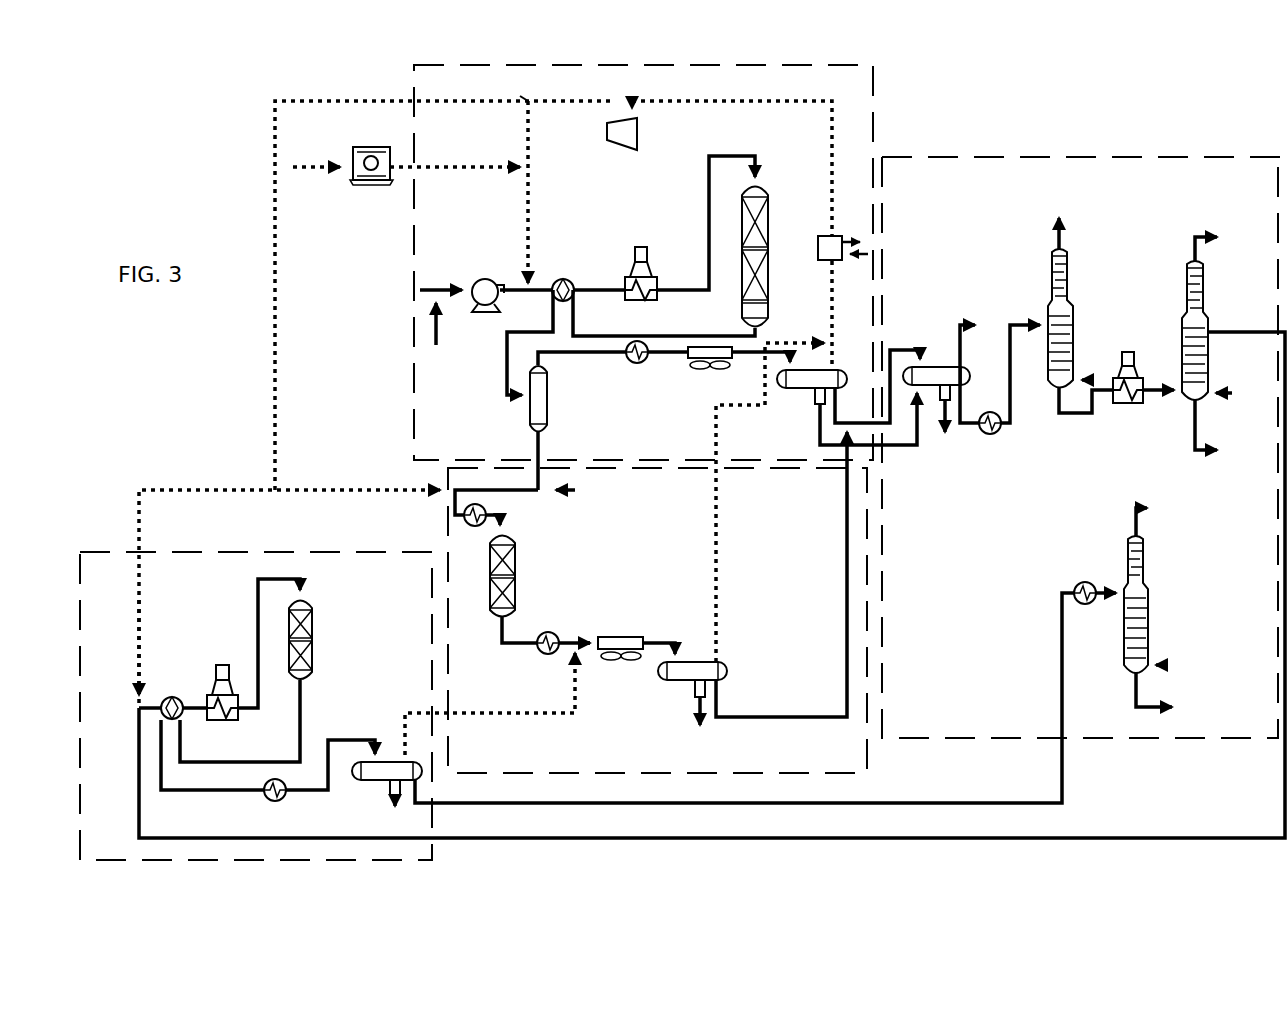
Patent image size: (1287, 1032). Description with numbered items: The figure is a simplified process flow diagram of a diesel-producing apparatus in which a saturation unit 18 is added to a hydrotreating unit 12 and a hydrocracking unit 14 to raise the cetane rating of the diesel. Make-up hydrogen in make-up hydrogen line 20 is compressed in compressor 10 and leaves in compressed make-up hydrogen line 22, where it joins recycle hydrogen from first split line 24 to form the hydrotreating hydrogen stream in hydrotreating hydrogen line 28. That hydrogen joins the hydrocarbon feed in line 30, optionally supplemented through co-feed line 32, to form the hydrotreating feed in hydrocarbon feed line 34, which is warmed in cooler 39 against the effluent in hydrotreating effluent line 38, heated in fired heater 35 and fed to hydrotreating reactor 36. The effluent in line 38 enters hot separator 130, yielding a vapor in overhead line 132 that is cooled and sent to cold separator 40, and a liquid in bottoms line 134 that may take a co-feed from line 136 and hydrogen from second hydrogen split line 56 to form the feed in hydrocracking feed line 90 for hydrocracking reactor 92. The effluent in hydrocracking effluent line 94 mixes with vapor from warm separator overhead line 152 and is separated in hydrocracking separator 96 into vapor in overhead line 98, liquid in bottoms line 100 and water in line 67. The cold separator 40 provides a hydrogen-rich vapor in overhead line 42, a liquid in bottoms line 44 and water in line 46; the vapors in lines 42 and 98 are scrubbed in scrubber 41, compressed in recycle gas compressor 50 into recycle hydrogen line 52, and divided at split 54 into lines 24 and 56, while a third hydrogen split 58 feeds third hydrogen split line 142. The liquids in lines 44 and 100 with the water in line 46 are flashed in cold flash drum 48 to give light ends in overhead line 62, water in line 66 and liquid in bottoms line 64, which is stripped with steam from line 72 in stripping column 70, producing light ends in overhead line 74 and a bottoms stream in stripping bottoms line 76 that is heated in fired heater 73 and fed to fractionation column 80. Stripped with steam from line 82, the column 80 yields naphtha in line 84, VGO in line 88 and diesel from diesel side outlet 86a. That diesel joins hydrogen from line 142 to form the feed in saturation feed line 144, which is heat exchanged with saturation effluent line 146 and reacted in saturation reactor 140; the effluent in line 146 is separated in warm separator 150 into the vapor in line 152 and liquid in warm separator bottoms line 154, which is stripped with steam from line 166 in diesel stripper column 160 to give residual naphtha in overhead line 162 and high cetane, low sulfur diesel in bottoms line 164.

The compressor 10 is at (392, 185).
The hydrotreating unit 12 is at (876, 75).
The hydrocracking unit 14 is at (448, 500).
The saturation unit 18 is at (215, 552).
The make-up hydrogen line 20 is at (312, 170).
The compressed make-up hydrogen line 22 is at (440, 178).
The first split line 24 is at (530, 155).
The hydrotreating hydrogen line 28 is at (526, 214).
The hydrocarbon feed line 30 is at (425, 290).
The co-feed line 32 is at (440, 312).
The hydrocarbon feed line 34 is at (545, 284).
The fired heater 35 is at (645, 262).
The hydrotreating reactor 36 is at (768, 210).
The hydrotreating effluent line 38 is at (676, 335).
The cooler 39 is at (572, 283).
The cold separator 40 is at (800, 388).
The scrubber 41 is at (817, 250).
The cold separator overhead line 42 is at (832, 312).
The cold separator bottoms line 44 is at (840, 400).
The aqueous line 46 is at (820, 442).
The cold flash drum 48 is at (935, 366).
The recycle gas compressor 50 is at (616, 142).
The recycle hydrogen line 52 is at (563, 102).
The split 54 is at (530, 100).
The second hydrogen split line 56 is at (402, 103).
The third hydrogen split 58 is at (278, 480).
The overhead line 62 is at (960, 322).
The bottoms line 64 is at (1028, 322).
The flash aqueous line 66 is at (942, 425).
The aqueous line 67 is at (698, 718).
The stripping column 70 is at (1050, 282).
The steam line 72 is at (1080, 378).
The fired heater 73 is at (1137, 365).
The overhead line 74 is at (1058, 240).
The stripping bottoms line 76 is at (1060, 420).
The fractionation column 80 is at (1186, 280).
The steam line 82 is at (1215, 392).
The overhead naphtha line 84 is at (1210, 240).
The diesel side outlet 86a is at (1210, 336).
The bottoms line 88 is at (1192, 418).
The hydrocracking feed line 90 is at (465, 527).
The hydrocracking reactor 92 is at (517, 575).
The hydrocracking effluent line 94 is at (505, 645).
The hydrocracking separator 96 is at (690, 661).
The hydrocracking separator overhead line 98 is at (717, 590).
The hydrocracking separator bottoms line 100 is at (790, 716).
The hot separator 130 is at (530, 415).
The overhead line 132 is at (605, 353).
The bottoms line 134 is at (540, 446).
The co-feed line 136 is at (565, 492).
The saturation reactor 140 is at (312, 600).
The third hydrogen split line 142 is at (138, 600).
The saturation feed line 144 is at (160, 700).
The saturation effluent line 146 is at (302, 700).
The warm separator 150 is at (392, 760).
The warm separator overhead line 152 is at (406, 712).
The warm separator bottoms line 154 is at (462, 806).
The diesel stripper column 160 is at (1146, 580).
The overhead line 162 is at (1134, 506).
The bottoms line 164 is at (1135, 693).
The steam line 166 is at (1156, 663).